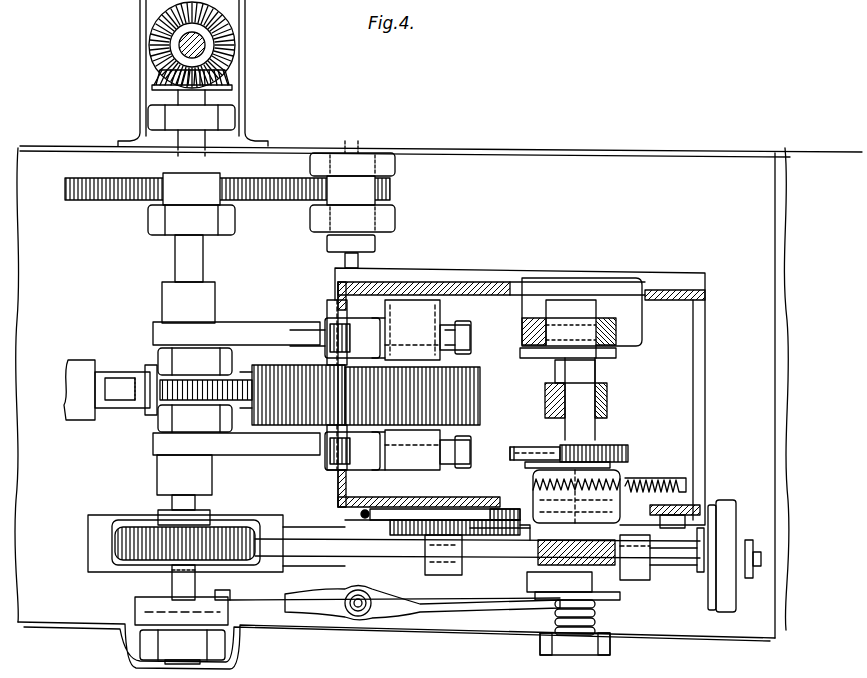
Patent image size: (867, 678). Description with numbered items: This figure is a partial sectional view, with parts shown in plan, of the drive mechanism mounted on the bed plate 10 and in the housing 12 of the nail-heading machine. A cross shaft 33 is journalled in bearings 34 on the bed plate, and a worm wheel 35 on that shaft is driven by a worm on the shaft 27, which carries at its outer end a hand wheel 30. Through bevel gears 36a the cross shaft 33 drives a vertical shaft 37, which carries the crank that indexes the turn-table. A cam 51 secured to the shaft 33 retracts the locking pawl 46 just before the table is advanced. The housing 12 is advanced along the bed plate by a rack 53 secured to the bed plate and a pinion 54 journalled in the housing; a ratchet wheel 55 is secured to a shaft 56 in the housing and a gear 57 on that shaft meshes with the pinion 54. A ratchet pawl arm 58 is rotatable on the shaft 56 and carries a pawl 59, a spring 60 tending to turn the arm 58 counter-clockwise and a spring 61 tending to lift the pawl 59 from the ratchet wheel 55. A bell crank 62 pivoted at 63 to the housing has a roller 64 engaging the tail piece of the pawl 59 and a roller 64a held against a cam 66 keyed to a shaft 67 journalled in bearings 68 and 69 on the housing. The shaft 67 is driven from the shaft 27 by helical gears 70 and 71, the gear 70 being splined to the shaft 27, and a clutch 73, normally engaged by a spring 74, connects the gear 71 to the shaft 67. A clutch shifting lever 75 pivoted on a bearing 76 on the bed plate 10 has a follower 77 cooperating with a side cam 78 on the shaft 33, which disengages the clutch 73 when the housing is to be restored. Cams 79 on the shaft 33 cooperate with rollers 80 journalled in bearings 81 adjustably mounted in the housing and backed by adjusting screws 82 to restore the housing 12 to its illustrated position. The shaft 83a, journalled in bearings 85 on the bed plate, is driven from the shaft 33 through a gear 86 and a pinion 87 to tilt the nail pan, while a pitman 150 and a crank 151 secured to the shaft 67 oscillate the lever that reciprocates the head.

The bed plate 10 is at (286, 626).
The housing 12 is at (478, 286).
The shaft 27 is at (329, 548).
The hand wheel 30 is at (728, 516).
The cross shaft 33 is at (178, 258).
The bearings 34 is at (165, 218).
The worm wheel 35 is at (115, 545).
The bevel gears 36a is at (160, 72).
The vertical shaft 37 is at (205, 45).
The pawl 46 is at (128, 404).
The cam 51 is at (240, 442).
The rack 53 is at (308, 366).
The pinion 54 is at (345, 396).
The ratchet wheel 55 is at (412, 540).
The shaft 56 is at (476, 320).
The gear 57 is at (482, 395).
The ratchet pawl arm 58 is at (395, 519).
The pawl 59 is at (512, 537).
The spring 60 is at (360, 515).
The spring 61 is at (468, 506).
The bell crank 62 is at (470, 455).
The pivot 63 is at (690, 473).
The roller 64 is at (528, 533).
The roller 64a is at (518, 448).
The cam 66 is at (572, 443).
The shaft 67 is at (638, 472).
The bearing 68 is at (626, 318).
The bearing 69 is at (586, 648).
The helical gear 70 is at (560, 580).
The helical gear 71 is at (640, 575).
The clutch 73 is at (604, 583).
The spring 74 is at (555, 620).
The clutch shifting lever 75 is at (378, 620).
The bearing 76 is at (357, 616).
The follower 77 is at (232, 596).
The side cam 78 is at (142, 610).
The cams 79 is at (266, 332).
The rollers 80 is at (326, 334).
The bearings 81 is at (363, 312).
The adjusting screws 82 is at (393, 304).
The shaft 83a is at (387, 137).
The bearings 85 is at (396, 170).
The gear 86 is at (270, 197).
The pinion 87 is at (352, 187).
The pitman 150 is at (607, 400).
The crank 151 is at (583, 392).